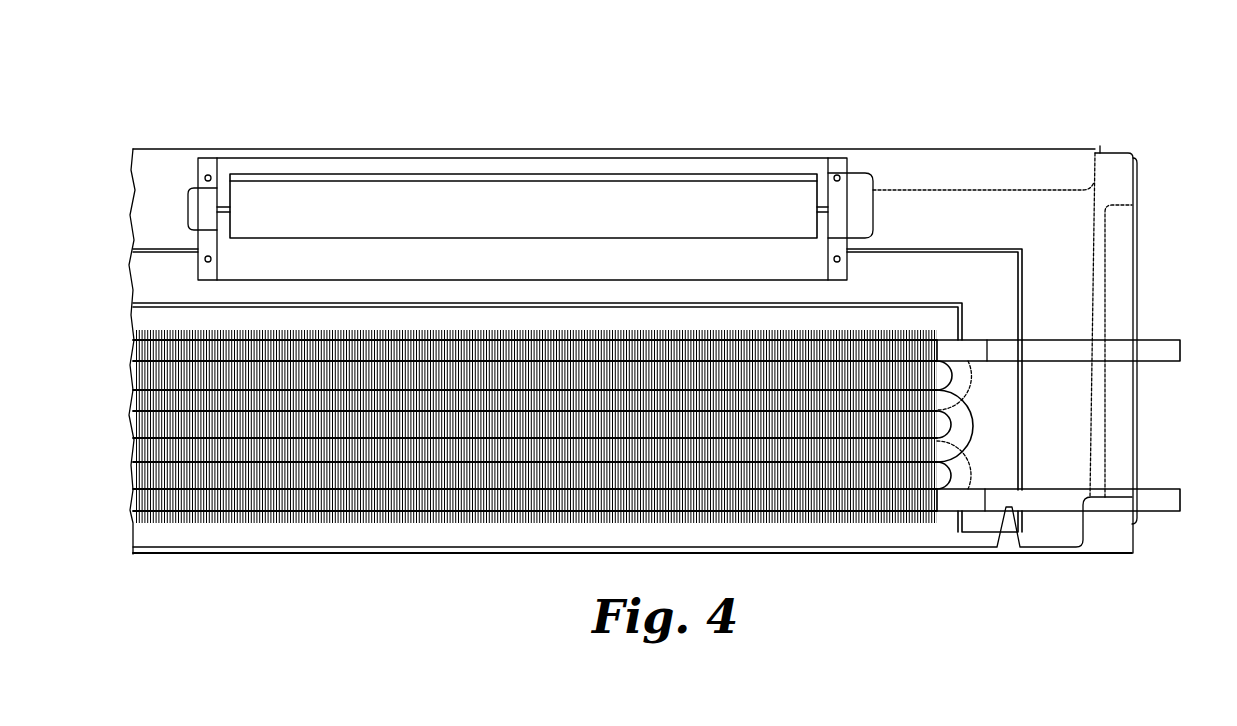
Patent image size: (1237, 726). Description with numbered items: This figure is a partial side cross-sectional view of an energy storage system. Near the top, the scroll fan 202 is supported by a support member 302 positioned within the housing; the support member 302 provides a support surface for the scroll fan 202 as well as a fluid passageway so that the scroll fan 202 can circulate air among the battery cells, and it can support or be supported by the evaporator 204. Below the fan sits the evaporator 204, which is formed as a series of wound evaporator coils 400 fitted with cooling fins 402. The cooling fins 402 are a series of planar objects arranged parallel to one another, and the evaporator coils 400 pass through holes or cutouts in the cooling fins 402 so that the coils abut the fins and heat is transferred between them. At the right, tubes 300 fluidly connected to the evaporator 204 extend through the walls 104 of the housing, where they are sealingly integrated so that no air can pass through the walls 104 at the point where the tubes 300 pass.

The walls 104 is at (1090, 347).
The scroll fan 202 is at (432, 200).
The evaporator 204 is at (950, 345).
The tubes 300 is at (1173, 340).
The support member 302 is at (895, 272).
The evaporator coils 400 is at (965, 375).
The cooling fins 402 is at (863, 498).